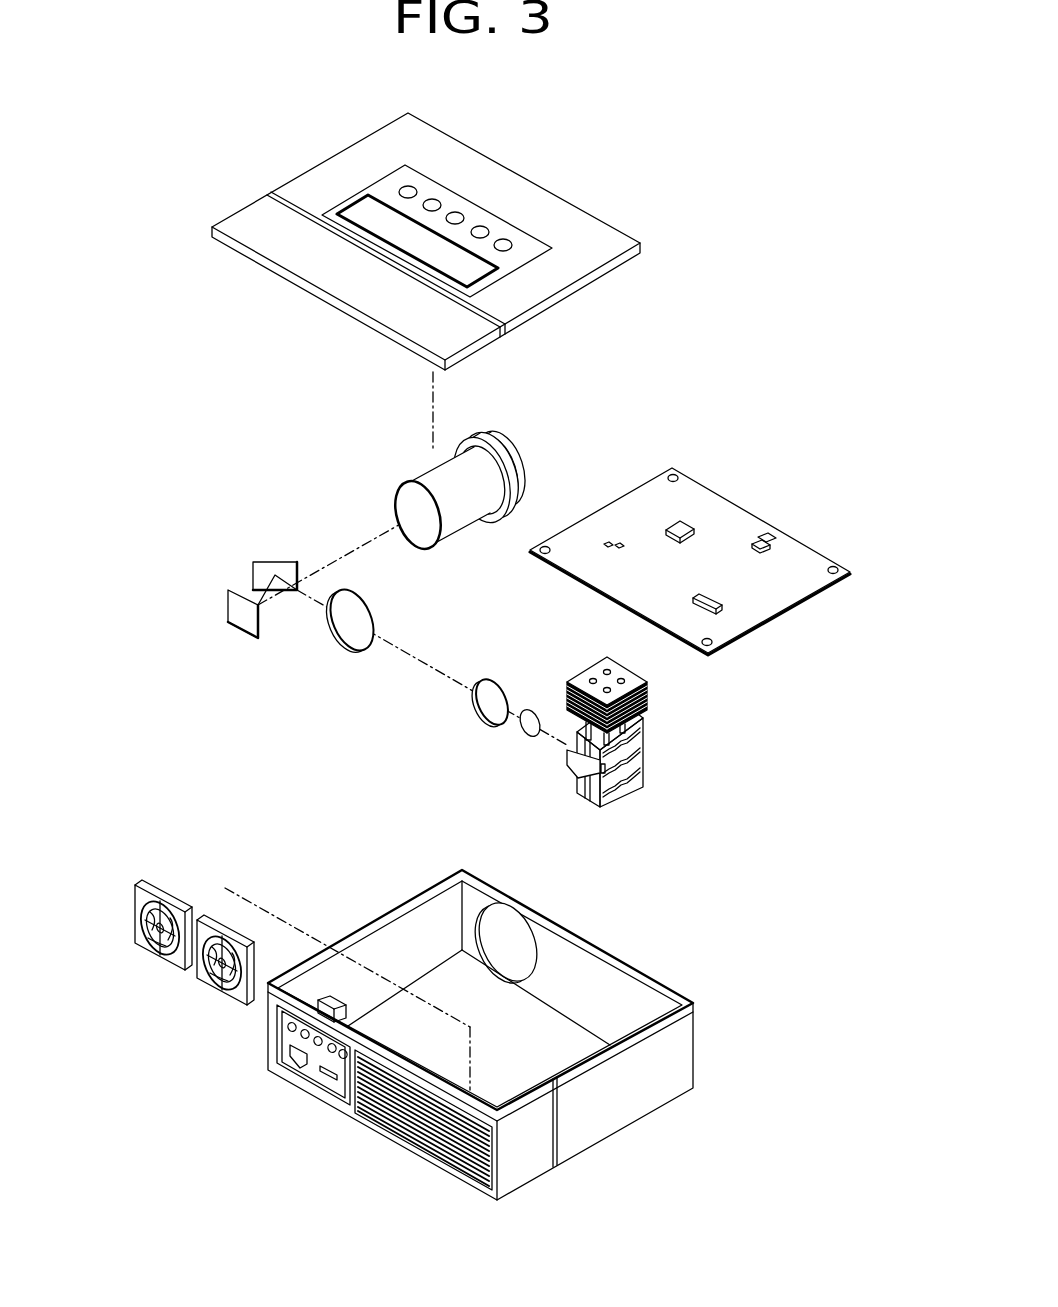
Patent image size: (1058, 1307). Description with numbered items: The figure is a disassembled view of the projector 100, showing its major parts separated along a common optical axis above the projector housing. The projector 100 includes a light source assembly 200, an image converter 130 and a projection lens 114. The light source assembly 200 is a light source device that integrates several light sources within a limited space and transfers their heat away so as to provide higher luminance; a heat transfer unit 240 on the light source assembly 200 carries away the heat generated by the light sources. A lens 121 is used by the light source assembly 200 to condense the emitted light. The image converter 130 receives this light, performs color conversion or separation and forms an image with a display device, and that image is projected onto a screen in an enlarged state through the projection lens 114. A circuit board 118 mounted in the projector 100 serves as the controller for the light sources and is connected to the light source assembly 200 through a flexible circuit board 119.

The projector 100 is at (744, 314).
The projection lens 114 is at (428, 475).
The circuit board 118 is at (738, 520).
The flexible circuit board 119 is at (587, 768).
The lens 121 is at (527, 732).
The image converter 130 is at (212, 600).
The light source assembly 200 is at (670, 774).
The heat transfer unit 240 is at (642, 728).